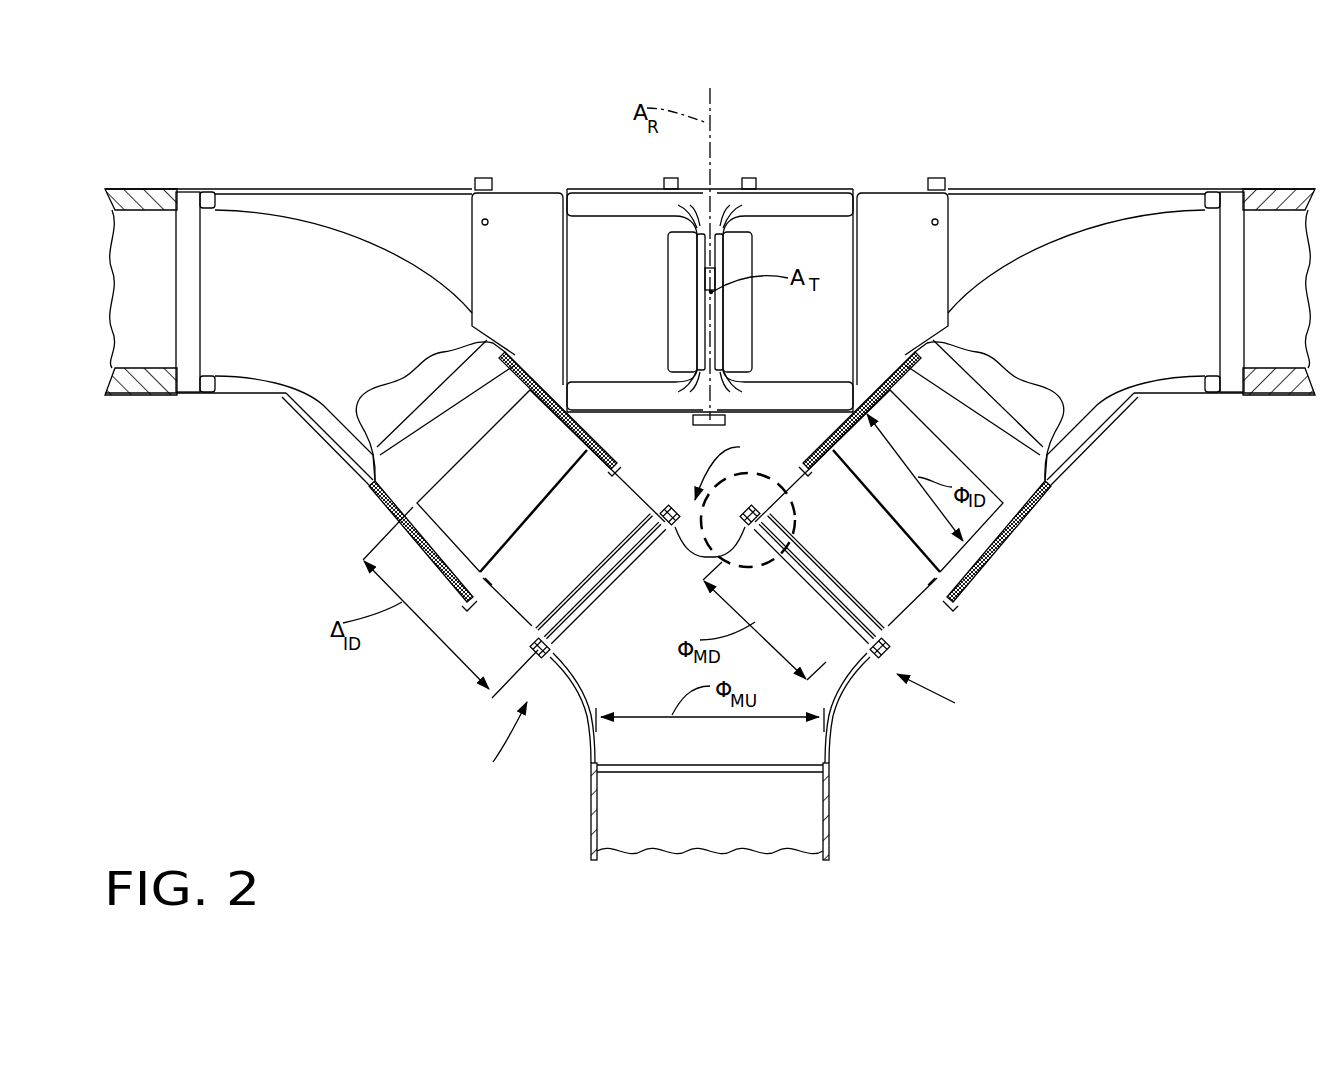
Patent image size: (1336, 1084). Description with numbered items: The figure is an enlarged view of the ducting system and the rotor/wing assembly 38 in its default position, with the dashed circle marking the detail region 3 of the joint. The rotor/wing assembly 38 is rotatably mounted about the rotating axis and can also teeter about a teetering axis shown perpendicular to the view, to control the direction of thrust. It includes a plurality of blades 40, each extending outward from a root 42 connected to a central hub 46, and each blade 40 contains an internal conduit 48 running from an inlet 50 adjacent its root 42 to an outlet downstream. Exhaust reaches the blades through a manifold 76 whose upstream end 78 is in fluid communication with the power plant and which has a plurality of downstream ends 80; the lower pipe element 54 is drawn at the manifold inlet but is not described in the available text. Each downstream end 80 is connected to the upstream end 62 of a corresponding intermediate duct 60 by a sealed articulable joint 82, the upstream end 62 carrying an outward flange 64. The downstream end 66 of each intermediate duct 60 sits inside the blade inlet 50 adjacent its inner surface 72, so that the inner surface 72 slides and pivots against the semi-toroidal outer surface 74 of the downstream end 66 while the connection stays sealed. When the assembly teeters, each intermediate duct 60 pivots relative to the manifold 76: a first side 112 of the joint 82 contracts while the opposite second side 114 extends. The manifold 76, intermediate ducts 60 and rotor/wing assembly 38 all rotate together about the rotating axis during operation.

The rotor/wing assembly 38 is at (1055, 112).
The blade 40 is at (1298, 188).
The root 42 is at (213, 200).
The central hub 46 is at (895, 187).
The internal conduit 48 is at (143, 230).
The inlet 50 is at (612, 441).
The outlet duct 54 is at (833, 826).
The intermediate duct 60 is at (922, 590).
The upstream end 62 is at (808, 572).
The flange 64 is at (667, 507).
The downstream end 66 is at (1038, 487).
The inner surface 72 is at (820, 462).
The outer surface 74 is at (1003, 515).
The manifold 76 is at (590, 728).
The upstream end 78 is at (640, 772).
The downstream end 80 is at (863, 615).
The sealed articulable joint 82 is at (945, 695).
The first side 112 is at (487, 741).
The second side 114 is at (739, 466).
The detail region of FIG. 3 is at (800, 535).